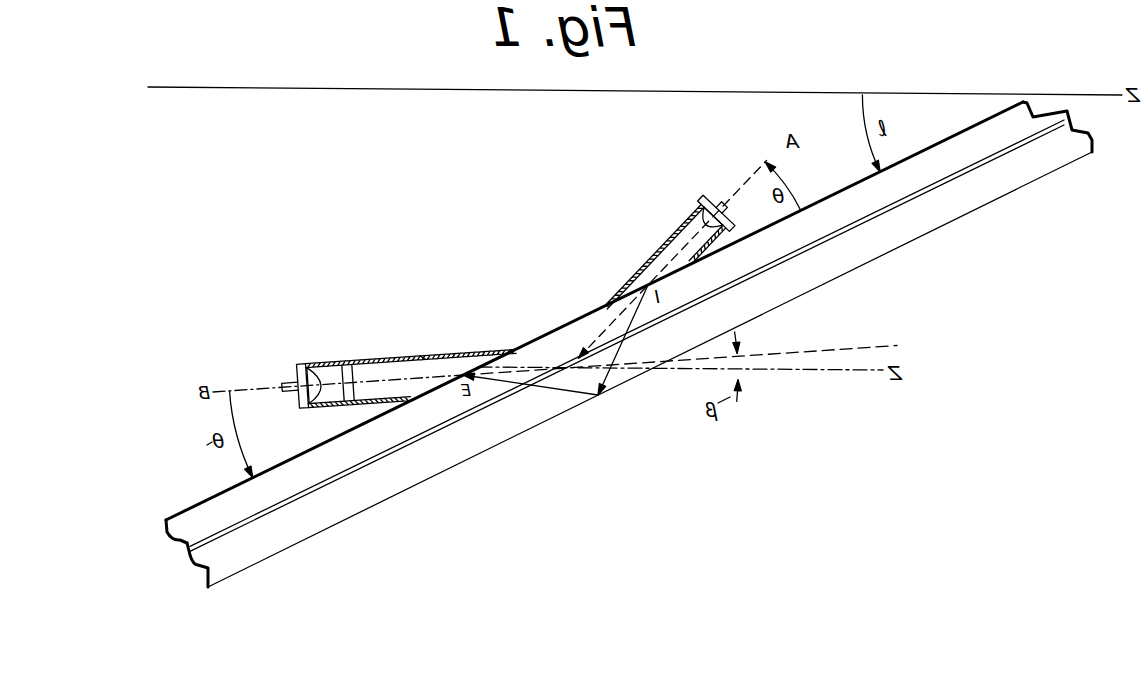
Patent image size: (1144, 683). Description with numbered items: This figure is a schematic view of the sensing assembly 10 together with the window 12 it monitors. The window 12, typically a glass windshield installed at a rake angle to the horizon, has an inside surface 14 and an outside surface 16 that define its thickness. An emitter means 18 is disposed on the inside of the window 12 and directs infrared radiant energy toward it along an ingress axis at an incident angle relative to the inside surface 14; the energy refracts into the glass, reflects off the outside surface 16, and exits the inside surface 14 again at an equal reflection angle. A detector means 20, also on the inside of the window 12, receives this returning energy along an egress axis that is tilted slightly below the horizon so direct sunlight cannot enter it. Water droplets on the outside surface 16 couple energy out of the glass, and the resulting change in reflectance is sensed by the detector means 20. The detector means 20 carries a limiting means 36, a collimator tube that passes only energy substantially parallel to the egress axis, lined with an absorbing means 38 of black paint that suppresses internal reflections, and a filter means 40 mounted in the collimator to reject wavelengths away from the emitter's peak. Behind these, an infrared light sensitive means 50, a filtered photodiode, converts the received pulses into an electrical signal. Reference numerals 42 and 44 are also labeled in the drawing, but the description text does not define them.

The sensing assembly 10 is at (591, 361).
The window 12 is at (272, 554).
The inside surface 14 is at (166, 520).
The outside surface 16 is at (437, 476).
The emitter means 18 is at (654, 246).
The detector means 20 is at (378, 345).
The limiting means 36 is at (488, 350).
The absorbing means 38 is at (425, 358).
The filter means 40 is at (355, 377).
The end step of workpiece 42 is at (198, 565).
The detector end cap 44 is at (700, 205).
The infrared light sensitive means 50 is at (298, 375).